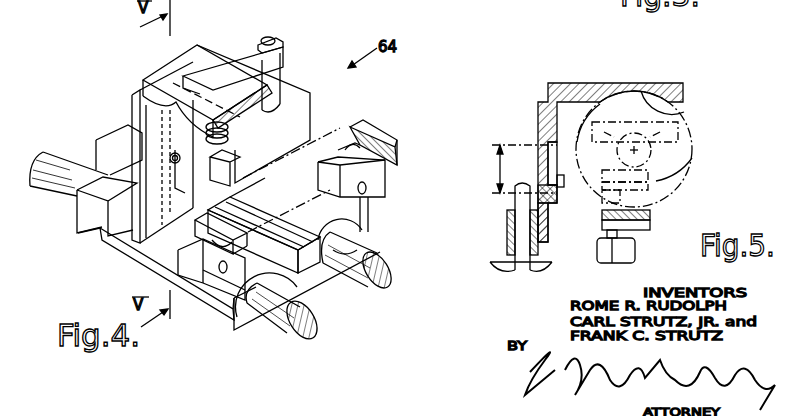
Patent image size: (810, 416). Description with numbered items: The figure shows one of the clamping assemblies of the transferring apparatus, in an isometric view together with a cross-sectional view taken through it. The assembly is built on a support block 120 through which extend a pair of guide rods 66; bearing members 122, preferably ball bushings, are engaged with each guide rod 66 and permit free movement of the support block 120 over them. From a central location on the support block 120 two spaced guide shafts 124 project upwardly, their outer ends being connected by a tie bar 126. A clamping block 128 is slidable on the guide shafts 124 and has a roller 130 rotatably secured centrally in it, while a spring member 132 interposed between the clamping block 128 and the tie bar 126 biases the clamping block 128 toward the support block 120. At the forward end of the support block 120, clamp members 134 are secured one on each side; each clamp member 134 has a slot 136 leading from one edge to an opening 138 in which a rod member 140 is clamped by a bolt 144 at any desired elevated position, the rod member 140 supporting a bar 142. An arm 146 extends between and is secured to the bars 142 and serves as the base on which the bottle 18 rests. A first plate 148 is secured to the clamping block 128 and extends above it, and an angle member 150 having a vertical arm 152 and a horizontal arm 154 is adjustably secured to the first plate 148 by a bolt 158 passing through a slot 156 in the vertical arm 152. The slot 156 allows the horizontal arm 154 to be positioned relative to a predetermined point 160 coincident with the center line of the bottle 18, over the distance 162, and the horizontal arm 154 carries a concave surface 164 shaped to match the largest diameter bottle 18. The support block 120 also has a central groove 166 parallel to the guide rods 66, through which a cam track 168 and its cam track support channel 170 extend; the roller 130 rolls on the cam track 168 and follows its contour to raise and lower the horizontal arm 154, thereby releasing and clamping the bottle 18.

In FIG. 5, the bottle 18 is at (690, 137).
In FIG. 4, the guide rods 66 is at (300, 337).
In FIG. 4, the support block 120 is at (117, 250).
In FIG. 5, the support block 120 is at (503, 268).
In FIG. 4, the bearing members 122 is at (327, 265).
In FIG. 4, the guide shafts 124 is at (130, 153).
In FIG. 5, the guide shafts 124 is at (515, 226).
In FIG. 4, the tie bar 126 is at (250, 55).
In FIG. 4, the clamping block 128 is at (307, 105).
In FIG. 5, the clamping block 128 is at (507, 240).
In FIG. 4, the roller 130 is at (255, 185).
In FIG. 4, the spring member 132 is at (232, 133).
In FIG. 4, the clamp members 134 is at (387, 176).
In FIG. 5, the clamp members 134 is at (636, 247).
In FIG. 4, the slot 136 is at (311, 232).
In FIG. 4, the opening 138 is at (355, 147).
In FIG. 5, the rod member 140 is at (607, 233).
In FIG. 4, the bar 142 is at (397, 160).
In FIG. 5, the bar 142 is at (655, 215).
In FIG. 4, the bolt 144 is at (367, 192).
In FIG. 4, the arm 146 is at (380, 137).
In FIG. 5, the arm 146 is at (660, 207).
In FIG. 4, the first plate 148 is at (97, 233).
In FIG. 5, the first plate 148 is at (548, 220).
In FIG. 5, the angle member 150 is at (576, 80).
In FIG. 5, the vertical arm 152 is at (538, 115).
In FIG. 4, the horizontal arm 154 is at (218, 62).
In FIG. 5, the horizontal arm 154 is at (653, 85).
In FIG. 4, the slot 156 is at (178, 196).
In FIG. 5, the slot 156 is at (538, 153).
In FIG. 4, the bolt 158 is at (212, 156).
In FIG. 5, the bolt 158 is at (559, 177).
In FIG. 5, the predetermined point 160 is at (640, 152).
In FIG. 5, the adjustment distance 162 is at (496, 167).
In FIG. 4, the concave surface 164 is at (146, 88).
In FIG. 5, the concave surface 164 is at (676, 104).
In FIG. 4, the central groove 166 is at (243, 323).
In FIG. 4, the cam track 168 is at (350, 222).
In FIG. 4, the cam track support channel 170 is at (333, 245).